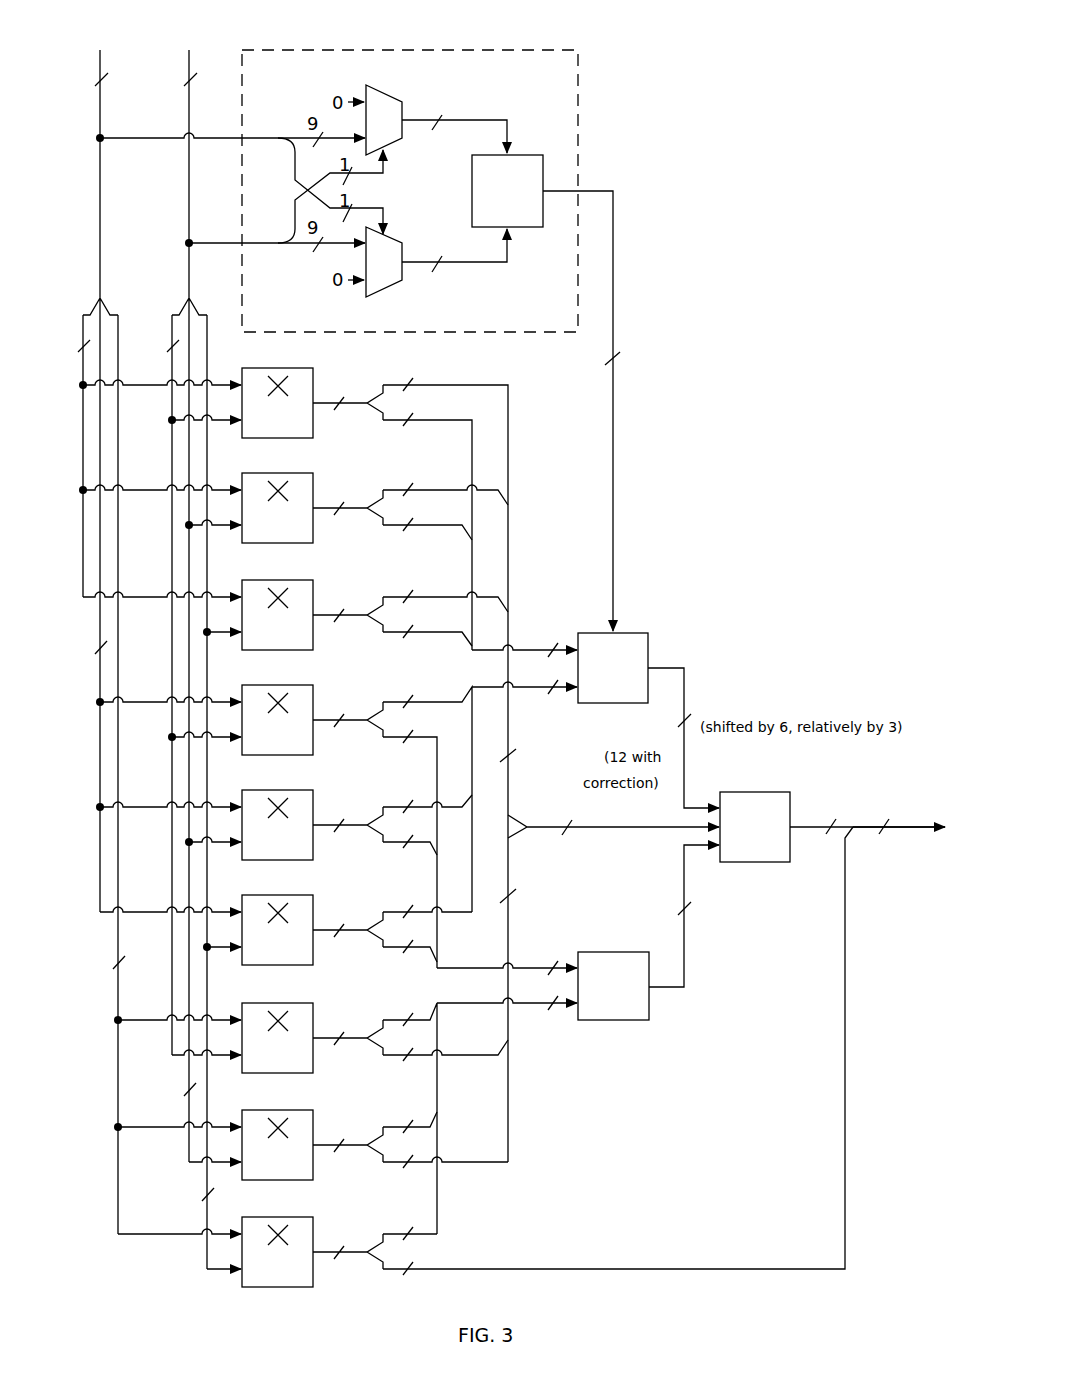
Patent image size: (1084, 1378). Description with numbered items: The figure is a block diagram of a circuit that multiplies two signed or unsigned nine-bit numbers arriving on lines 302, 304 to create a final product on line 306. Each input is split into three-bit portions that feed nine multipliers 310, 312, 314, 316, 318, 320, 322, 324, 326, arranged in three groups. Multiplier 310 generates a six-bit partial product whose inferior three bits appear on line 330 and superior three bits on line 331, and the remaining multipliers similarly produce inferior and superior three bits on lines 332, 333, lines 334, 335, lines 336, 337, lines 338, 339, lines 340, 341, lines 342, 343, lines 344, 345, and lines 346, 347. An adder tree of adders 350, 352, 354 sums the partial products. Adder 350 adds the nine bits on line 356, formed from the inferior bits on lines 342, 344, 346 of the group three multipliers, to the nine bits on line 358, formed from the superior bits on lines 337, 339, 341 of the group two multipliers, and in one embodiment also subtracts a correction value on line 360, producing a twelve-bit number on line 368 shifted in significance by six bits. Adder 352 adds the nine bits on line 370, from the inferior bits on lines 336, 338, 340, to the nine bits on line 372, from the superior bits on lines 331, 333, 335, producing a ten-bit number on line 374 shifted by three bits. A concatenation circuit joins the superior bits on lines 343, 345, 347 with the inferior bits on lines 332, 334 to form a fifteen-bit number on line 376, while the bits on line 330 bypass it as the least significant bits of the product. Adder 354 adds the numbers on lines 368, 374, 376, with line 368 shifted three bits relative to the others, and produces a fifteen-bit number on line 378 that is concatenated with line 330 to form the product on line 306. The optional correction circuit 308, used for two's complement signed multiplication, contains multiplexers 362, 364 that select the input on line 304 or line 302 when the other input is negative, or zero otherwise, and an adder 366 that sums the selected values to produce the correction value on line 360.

The line 302 is at (187, 57).
The line 304 is at (98, 57).
The line 306 is at (920, 827).
The optional correction circuit 308 is at (273, 50).
The multiplier 310 is at (300, 1217).
The multiplier 312 is at (300, 1110).
The multiplier 314 is at (300, 1003).
The multiplier 316 is at (300, 895).
The multiplier 318 is at (300, 790).
The multiplier 320 is at (300, 685).
The multiplier 322 is at (300, 580).
The multiplier 324 is at (300, 473).
The multiplier 326 is at (300, 368).
The line 330 is at (386, 1273).
The line 331 is at (423, 1231).
The line 332 is at (386, 1166).
The line 333 is at (423, 1124).
The line 334 is at (386, 1059).
The line 335 is at (423, 1017).
The line 336 is at (386, 951).
The line 337 is at (423, 909).
The line 338 is at (386, 846).
The line 339 is at (423, 804).
The line 340 is at (386, 741).
The line 341 is at (423, 699).
The line 342 is at (386, 636).
The line 343 is at (423, 594).
The line 344 is at (386, 529).
The line 345 is at (423, 487).
The line 346 is at (386, 424).
The line 347 is at (423, 382).
The adder 350 is at (635, 633).
The adder 352 is at (603, 952).
The adder 354 is at (750, 791).
The line 356 is at (574, 646).
The line 358 is at (566, 692).
The line 360 is at (604, 190).
The multiplexer 362 is at (392, 146).
The multiplexer 364 is at (395, 235).
The adder 366 is at (532, 154).
The line 368 is at (671, 668).
The line 370 is at (560, 965).
The line 372 is at (557, 1007).
The line 374 is at (672, 990).
The line 376 is at (583, 830).
The line 378 is at (804, 830).